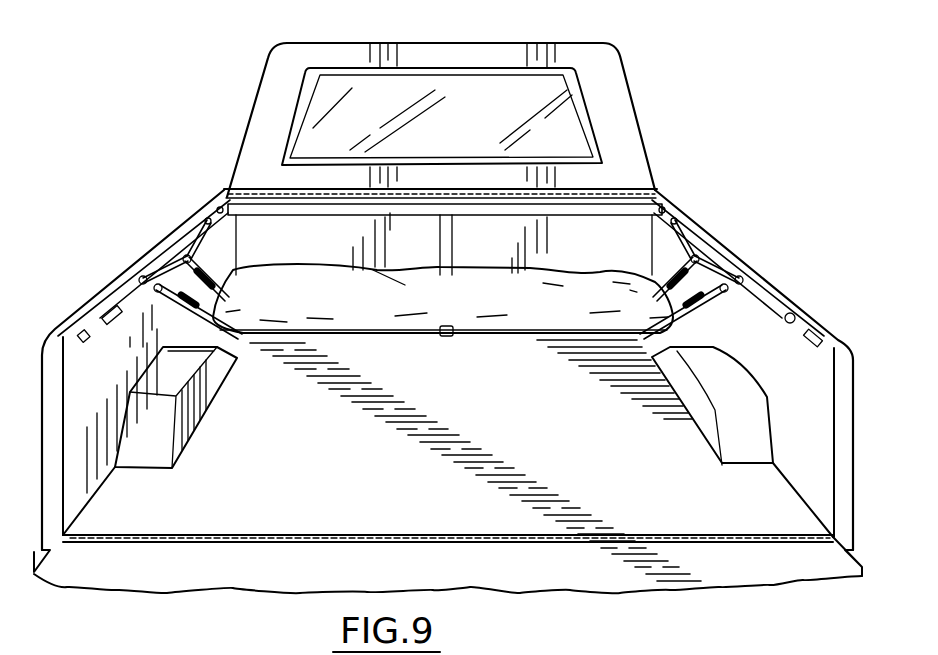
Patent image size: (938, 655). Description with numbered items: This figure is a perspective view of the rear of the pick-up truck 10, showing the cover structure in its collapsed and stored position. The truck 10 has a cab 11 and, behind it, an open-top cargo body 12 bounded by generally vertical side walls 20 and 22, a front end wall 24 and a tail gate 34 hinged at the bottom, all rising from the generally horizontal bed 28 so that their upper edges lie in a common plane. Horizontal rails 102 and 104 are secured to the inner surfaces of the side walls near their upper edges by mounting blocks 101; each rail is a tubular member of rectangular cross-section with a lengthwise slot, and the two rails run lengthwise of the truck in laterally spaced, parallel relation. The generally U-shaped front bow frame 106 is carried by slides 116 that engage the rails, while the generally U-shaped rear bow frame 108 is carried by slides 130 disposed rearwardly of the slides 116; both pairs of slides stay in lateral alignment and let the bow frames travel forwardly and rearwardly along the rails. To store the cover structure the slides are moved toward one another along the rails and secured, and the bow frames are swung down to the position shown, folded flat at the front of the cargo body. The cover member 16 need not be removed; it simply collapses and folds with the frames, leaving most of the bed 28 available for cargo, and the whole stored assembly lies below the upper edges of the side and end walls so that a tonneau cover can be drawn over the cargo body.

The pick-up truck 10 is at (662, 136).
The cab 11 is at (268, 96).
The open-top cargo body 12 is at (786, 260).
The cover member 16 is at (298, 310).
The side wall 20 is at (90, 332).
The side wall 22 is at (800, 369).
The front end wall 24 is at (468, 223).
The bed 28 is at (570, 434).
The tail gate 34 is at (207, 582).
The mounting block 101 is at (224, 193).
The horizontal rail 102 is at (137, 272).
The horizontal rail 104 is at (690, 226).
The front bow frame 106 is at (203, 258).
The rear bow frame 108 is at (155, 290).
The slide 116 is at (720, 262).
The slide 130 is at (737, 292).